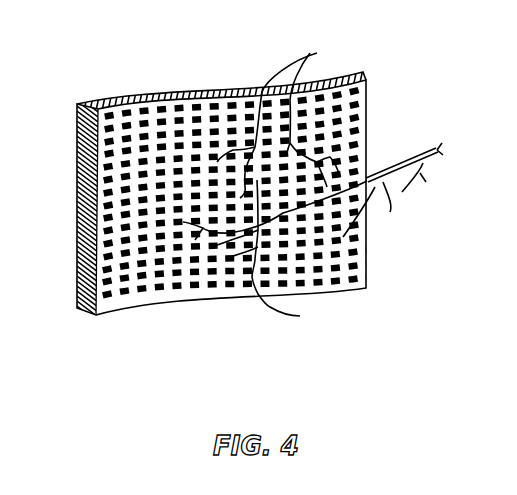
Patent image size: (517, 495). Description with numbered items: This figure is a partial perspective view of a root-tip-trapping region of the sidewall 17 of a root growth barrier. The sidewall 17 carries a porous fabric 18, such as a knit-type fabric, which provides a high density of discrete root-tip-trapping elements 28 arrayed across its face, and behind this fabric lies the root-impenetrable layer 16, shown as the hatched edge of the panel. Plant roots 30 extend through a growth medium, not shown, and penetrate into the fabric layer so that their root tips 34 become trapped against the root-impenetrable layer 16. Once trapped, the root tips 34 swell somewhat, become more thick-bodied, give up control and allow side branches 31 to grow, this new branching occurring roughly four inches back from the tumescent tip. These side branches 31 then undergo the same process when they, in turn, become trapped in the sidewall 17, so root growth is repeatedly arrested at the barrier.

The root-impenetrable layer 16 is at (78, 170).
The sidewall 17 is at (398, 61).
The porous fabric 18 is at (202, 72).
The root-tip-trapping elements 28 is at (162, 93).
The plant roots 30 is at (410, 158).
The side branches 31 is at (360, 220).
The root tips 34 is at (284, 120).